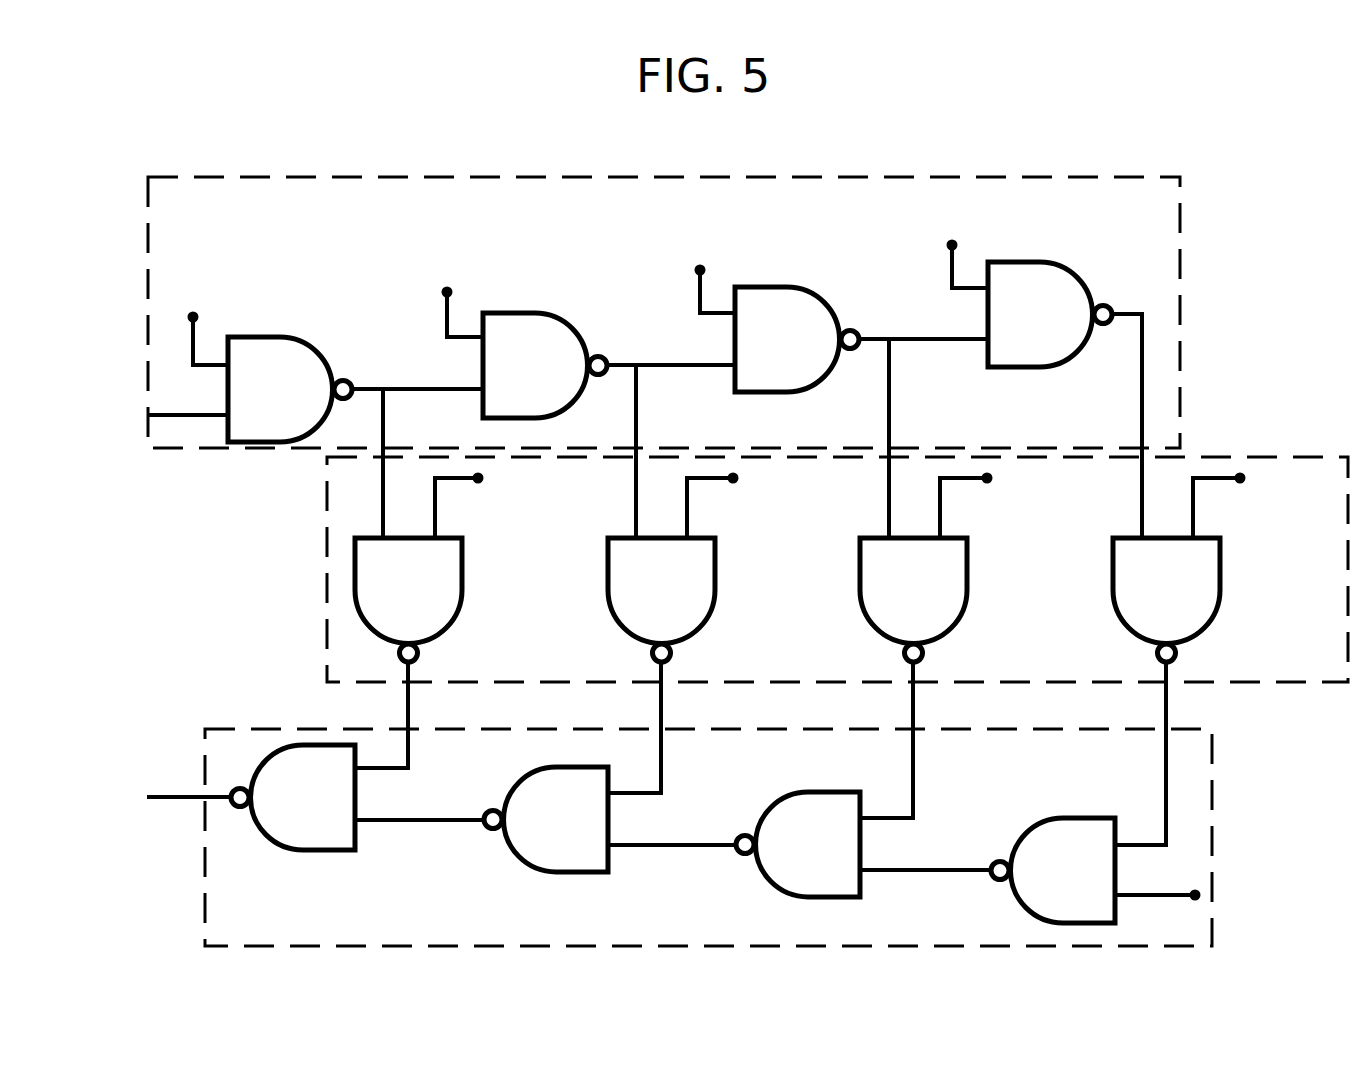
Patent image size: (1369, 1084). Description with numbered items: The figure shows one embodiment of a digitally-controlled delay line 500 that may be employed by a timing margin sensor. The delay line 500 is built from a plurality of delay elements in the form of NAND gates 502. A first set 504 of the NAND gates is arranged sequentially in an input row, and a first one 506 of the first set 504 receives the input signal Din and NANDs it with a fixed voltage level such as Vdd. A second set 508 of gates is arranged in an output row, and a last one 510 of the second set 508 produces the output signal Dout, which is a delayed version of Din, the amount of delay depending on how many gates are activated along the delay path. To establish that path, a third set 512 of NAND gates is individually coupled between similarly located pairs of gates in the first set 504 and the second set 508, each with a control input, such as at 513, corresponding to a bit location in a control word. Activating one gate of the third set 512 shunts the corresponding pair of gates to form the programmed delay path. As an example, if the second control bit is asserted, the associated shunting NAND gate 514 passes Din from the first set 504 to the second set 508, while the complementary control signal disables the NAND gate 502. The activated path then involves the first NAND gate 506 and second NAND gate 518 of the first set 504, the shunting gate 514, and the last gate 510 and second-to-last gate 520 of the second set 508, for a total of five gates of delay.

The digitally-controlled delay line 500 is at (1208, 254).
The NAND gate 502 is at (794, 286).
The first set of NAND gates 504 is at (1085, 177).
The first NAND gate 506 is at (269, 336).
The second set of NAND gates 508 is at (1212, 803).
The last NAND gate 510 is at (308, 846).
The third set of NAND gates 512 is at (327, 577).
The control input 513 is at (458, 478).
The shunting NAND gate 514 is at (716, 578).
The second NAND gate 518 is at (512, 312).
The second-to-last NAND gate 520 is at (548, 873).